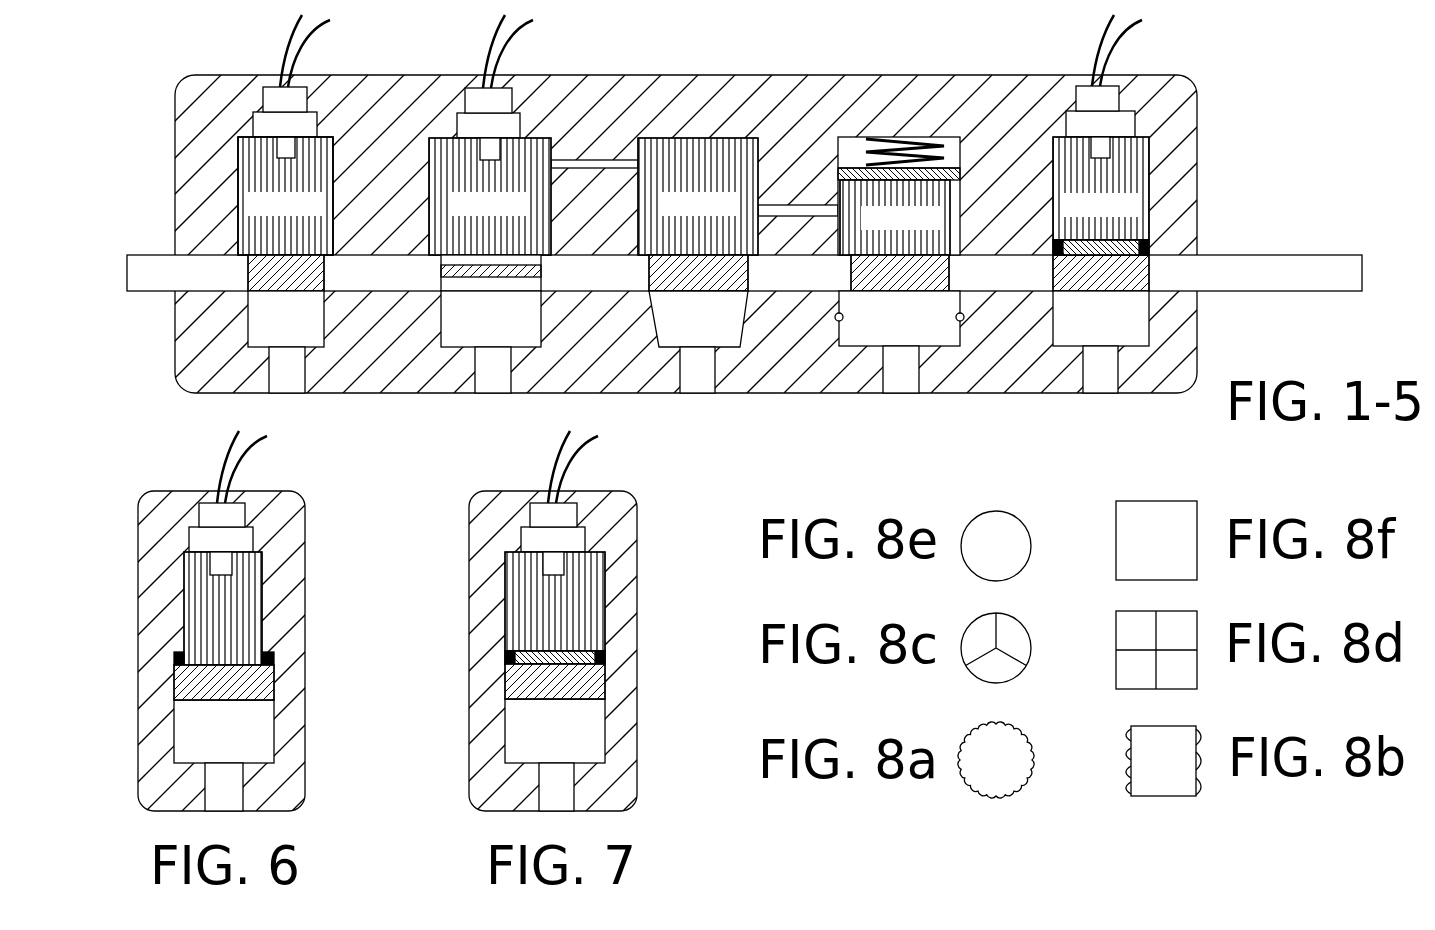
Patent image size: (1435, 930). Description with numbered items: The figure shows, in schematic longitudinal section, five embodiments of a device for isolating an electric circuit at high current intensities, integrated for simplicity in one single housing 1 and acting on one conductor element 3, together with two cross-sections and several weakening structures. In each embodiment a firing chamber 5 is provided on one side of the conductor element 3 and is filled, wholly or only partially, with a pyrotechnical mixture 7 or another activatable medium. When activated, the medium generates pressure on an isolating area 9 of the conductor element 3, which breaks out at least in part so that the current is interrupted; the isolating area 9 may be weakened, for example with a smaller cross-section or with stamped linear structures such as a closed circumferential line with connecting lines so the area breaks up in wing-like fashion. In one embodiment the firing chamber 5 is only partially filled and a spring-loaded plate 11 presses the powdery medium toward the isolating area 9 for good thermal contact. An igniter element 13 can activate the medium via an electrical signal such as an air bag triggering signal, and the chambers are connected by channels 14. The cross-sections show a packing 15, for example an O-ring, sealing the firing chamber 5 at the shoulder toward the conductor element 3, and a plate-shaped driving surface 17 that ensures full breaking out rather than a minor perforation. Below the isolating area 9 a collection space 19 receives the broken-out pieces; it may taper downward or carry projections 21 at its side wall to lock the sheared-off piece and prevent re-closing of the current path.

In FIG. 1-5, the housing 1 is at (600, 85).
In FIG. 6, the housing 1 is at (297, 548).
In FIG. 7, the housing 1 is at (623, 548).
In FIG. 1-5, the conductor element 3 is at (153, 283).
In FIG. 1-5, the firing chamber 5 is at (257, 165).
In FIG. 1-5, the pyrotechnical mixture 7 is at (243, 140).
In FIG. 6, the pyrotechnical mixture 7 is at (250, 617).
In FIG. 7, the pyrotechnical mixture 7 is at (592, 618).
In FIG. 1-5, the isolating area 9 is at (315, 278).
In FIG. 6, the isolating area 9 is at (262, 683).
In FIG. 7, the isolating area 9 is at (590, 683).
In FIG. 1-5, the spring-loaded plate 11 is at (942, 150).
In FIG. 1-5, the igniter element 13 is at (298, 97).
In FIG. 6, the igniter element 13 is at (232, 512).
In FIG. 7, the igniter element 13 is at (563, 512).
In FIG. 1-5, the channel 14 is at (613, 168).
In FIG. 1-5, the packing 15 is at (1150, 245).
In FIG. 6, the packing 15 is at (275, 658).
In FIG. 1-5, the driving surface 17 is at (1145, 240).
In FIG. 1-5, the collection space 19 is at (272, 330).
In FIG. 1-5, the opening 21 is at (957, 322).